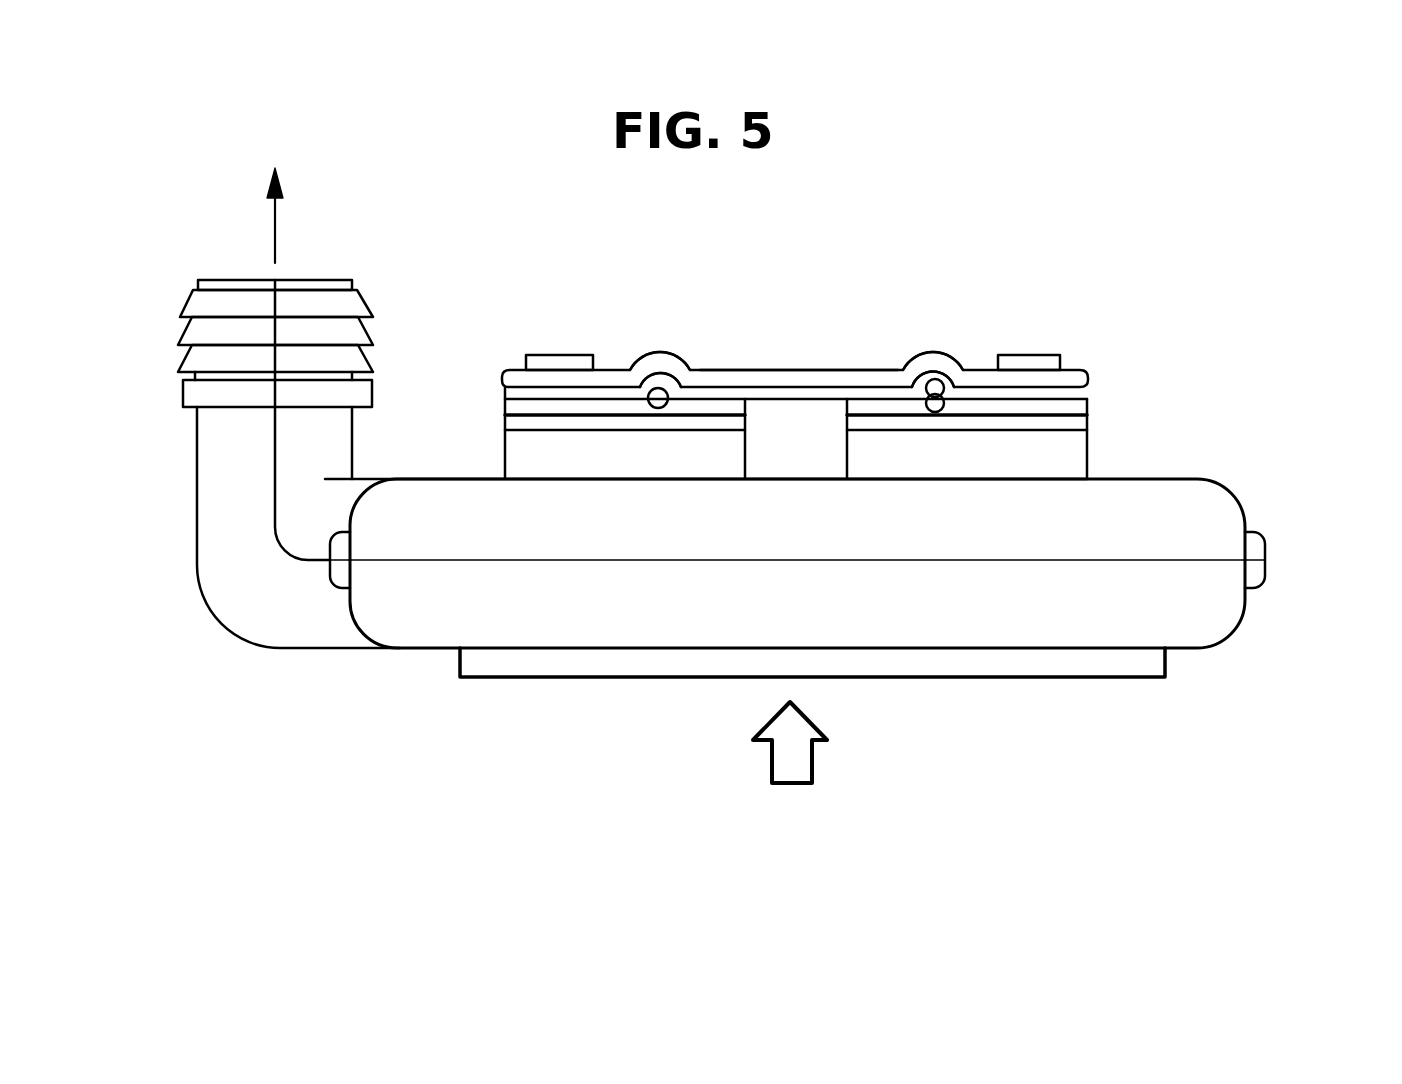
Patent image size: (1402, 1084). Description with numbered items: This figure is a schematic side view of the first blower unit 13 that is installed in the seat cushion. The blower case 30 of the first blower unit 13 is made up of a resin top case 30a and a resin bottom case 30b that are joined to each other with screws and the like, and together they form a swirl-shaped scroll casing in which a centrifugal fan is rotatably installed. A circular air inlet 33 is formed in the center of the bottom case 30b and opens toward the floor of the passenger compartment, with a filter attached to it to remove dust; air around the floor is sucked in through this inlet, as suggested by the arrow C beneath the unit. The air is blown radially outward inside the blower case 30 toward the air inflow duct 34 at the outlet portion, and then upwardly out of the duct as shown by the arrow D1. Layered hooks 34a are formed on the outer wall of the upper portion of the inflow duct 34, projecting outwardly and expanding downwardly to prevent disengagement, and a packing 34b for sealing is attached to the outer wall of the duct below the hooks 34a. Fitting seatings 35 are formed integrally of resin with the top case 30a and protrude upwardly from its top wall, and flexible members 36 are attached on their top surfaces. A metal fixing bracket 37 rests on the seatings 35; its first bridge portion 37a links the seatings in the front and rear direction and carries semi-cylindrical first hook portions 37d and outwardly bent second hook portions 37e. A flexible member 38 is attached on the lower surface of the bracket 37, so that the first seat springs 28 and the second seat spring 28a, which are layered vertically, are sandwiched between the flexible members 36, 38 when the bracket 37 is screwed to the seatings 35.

The first blower unit 13 is at (470, 462).
The first seat spring 28 is at (692, 370).
The second seat spring 28a is at (950, 400).
The blower case 30 is at (1333, 500).
The top case 30a is at (1213, 515).
The bottom case 30b is at (1213, 598).
The air inlet 33 is at (1028, 678).
The air inflow duct 34 is at (197, 480).
The hooks 34a is at (188, 298).
The packing 34b is at (185, 397).
The fitting seatings 35 is at (522, 426).
The flexible members 36 is at (528, 407).
The fixing bracket 37 is at (765, 360).
The first bridge portion 37a is at (825, 370).
The first hook portions 37d is at (655, 352).
The second hook portions 37e is at (572, 355).
The flexible member 38 is at (1087, 390).
The direction C is at (812, 760).
The arrow D1 is at (275, 218).